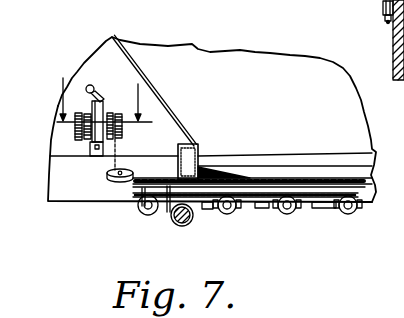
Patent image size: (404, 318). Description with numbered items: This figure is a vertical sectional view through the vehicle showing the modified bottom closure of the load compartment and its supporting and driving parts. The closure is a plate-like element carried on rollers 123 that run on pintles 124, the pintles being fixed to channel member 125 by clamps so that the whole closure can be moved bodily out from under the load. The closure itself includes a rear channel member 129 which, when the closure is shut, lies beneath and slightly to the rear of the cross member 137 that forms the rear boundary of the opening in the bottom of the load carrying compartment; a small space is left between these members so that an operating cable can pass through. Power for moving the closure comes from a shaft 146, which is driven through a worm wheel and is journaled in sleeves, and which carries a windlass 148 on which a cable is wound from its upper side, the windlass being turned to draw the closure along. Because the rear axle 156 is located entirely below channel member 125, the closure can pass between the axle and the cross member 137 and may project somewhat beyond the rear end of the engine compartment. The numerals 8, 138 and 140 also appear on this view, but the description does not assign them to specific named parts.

The section line 8- 8 is at (99, 95).
The rollers 123 is at (144, 215).
The pintles 124 is at (340, 213).
The channel member 125 is at (72, 176).
The rear channel member 129 is at (171, 212).
The cross member 137 is at (180, 144).
The table 138 is at (243, 168).
The cover hood 140 is at (233, 75).
The shaft 146 is at (385, 7).
The windlass 148 is at (393, 50).
The rear axle 156 is at (183, 228).